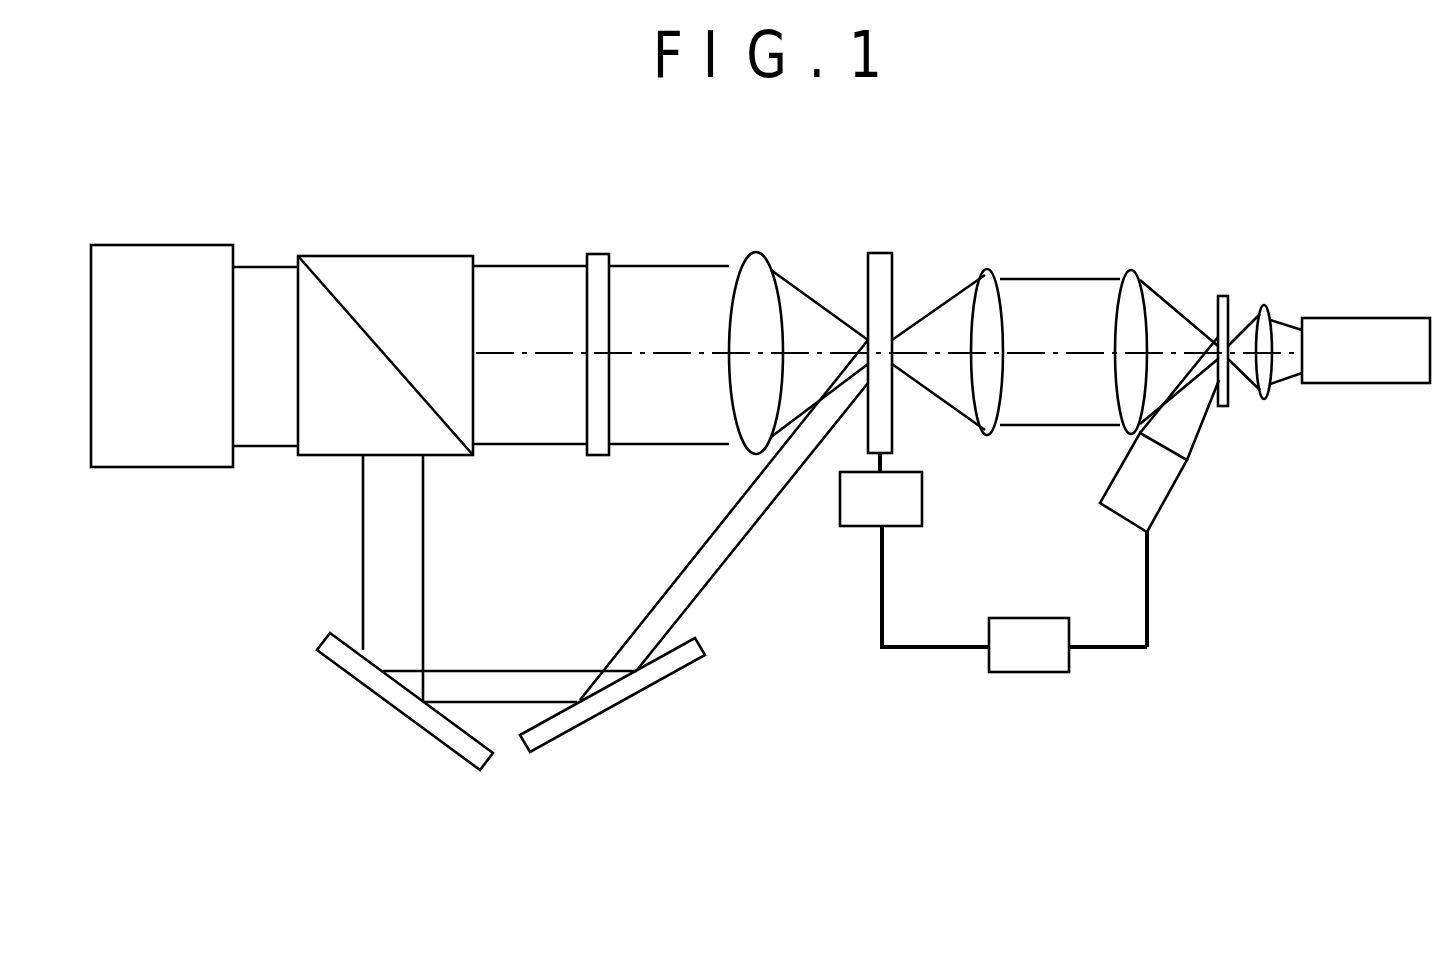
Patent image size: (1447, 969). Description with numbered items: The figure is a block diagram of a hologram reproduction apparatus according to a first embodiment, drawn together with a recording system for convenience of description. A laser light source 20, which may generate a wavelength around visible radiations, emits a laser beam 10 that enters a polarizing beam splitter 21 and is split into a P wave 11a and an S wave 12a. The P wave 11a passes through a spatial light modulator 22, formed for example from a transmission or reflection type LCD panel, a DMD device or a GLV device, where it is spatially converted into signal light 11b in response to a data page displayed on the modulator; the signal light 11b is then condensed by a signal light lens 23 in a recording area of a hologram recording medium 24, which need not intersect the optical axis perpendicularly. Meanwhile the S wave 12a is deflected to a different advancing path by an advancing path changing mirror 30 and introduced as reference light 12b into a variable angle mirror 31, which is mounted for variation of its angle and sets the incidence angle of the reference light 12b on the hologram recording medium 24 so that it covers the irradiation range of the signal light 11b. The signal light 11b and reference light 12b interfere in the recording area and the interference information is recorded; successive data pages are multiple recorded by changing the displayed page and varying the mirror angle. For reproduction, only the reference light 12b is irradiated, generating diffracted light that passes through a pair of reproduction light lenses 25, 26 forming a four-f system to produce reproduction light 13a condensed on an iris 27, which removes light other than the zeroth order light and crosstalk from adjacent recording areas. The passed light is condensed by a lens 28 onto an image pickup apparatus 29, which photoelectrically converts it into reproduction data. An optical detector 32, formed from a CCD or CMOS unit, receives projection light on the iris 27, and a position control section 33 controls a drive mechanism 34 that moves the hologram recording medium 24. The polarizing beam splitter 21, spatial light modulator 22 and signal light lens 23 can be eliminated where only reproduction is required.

The laser beam 10 is at (264, 266).
The P wave 11a is at (505, 266).
The signal light 11b is at (669, 266).
The S wave 12a is at (424, 561).
The reference light 12b is at (735, 559).
The reproduction light 13a is at (1049, 279).
The laser light source 20 is at (191, 243).
The polarizing beam splitter 21 is at (377, 256).
The spatial light modulator 22 is at (598, 254).
The signal light lens 23 is at (763, 251).
The hologram recording medium 24 is at (880, 253).
The reproduction light lens 25 is at (987, 268).
The reproduction light lens 26 is at (1131, 268).
The iris 27 is at (1223, 295).
The lens 28 is at (1263, 305).
The image pickup apparatus 29 is at (1373, 318).
The advancing path changing mirror 30 is at (425, 738).
The variable angle mirror 31 is at (625, 705).
The optical detector 32 is at (1172, 494).
The position control section 33 is at (1012, 672).
The drive mechanism 34 is at (922, 497).